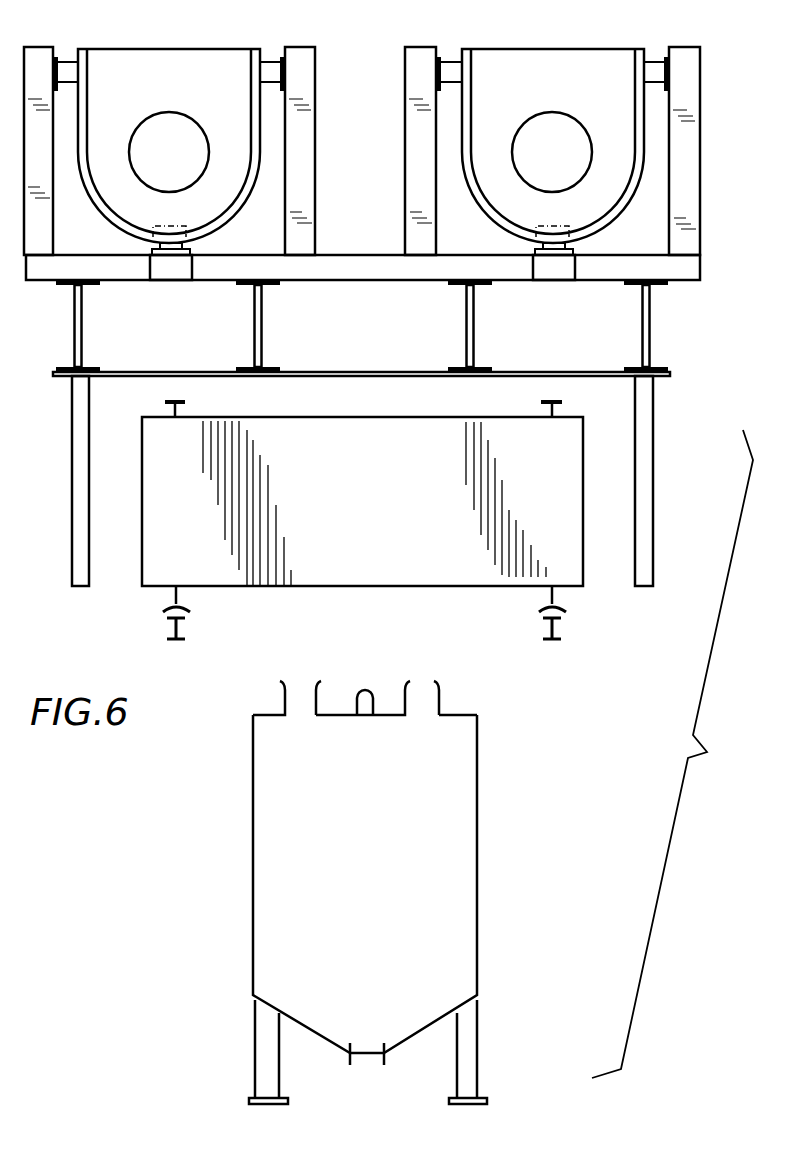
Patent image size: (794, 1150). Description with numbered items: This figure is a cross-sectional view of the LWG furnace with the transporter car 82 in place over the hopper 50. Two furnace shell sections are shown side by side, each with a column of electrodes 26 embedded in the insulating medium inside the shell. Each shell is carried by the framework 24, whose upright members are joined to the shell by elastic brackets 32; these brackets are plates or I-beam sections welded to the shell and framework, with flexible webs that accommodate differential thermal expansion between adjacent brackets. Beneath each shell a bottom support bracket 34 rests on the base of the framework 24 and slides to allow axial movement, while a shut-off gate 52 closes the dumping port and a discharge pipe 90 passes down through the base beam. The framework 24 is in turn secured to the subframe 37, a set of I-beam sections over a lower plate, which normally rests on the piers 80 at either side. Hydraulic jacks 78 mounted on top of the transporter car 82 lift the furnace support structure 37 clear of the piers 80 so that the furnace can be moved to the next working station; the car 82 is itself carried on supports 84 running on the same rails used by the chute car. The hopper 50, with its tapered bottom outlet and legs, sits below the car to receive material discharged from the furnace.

The framework 24 is at (315, 78).
The column of electrodes 26 is at (188, 151).
The elastic brackets 32 is at (60, 75).
The bottom support brackets 34 is at (190, 247).
The subframe 37 is at (650, 350).
The hopper 50 is at (366, 865).
The shut-off gates 52 is at (187, 212).
The hydraulic jacks 78 is at (183, 404).
The piers 80 is at (72, 470).
The transporter car 82 is at (425, 500).
The support 84 is at (185, 626).
The discharge pipes 90 is at (182, 272).